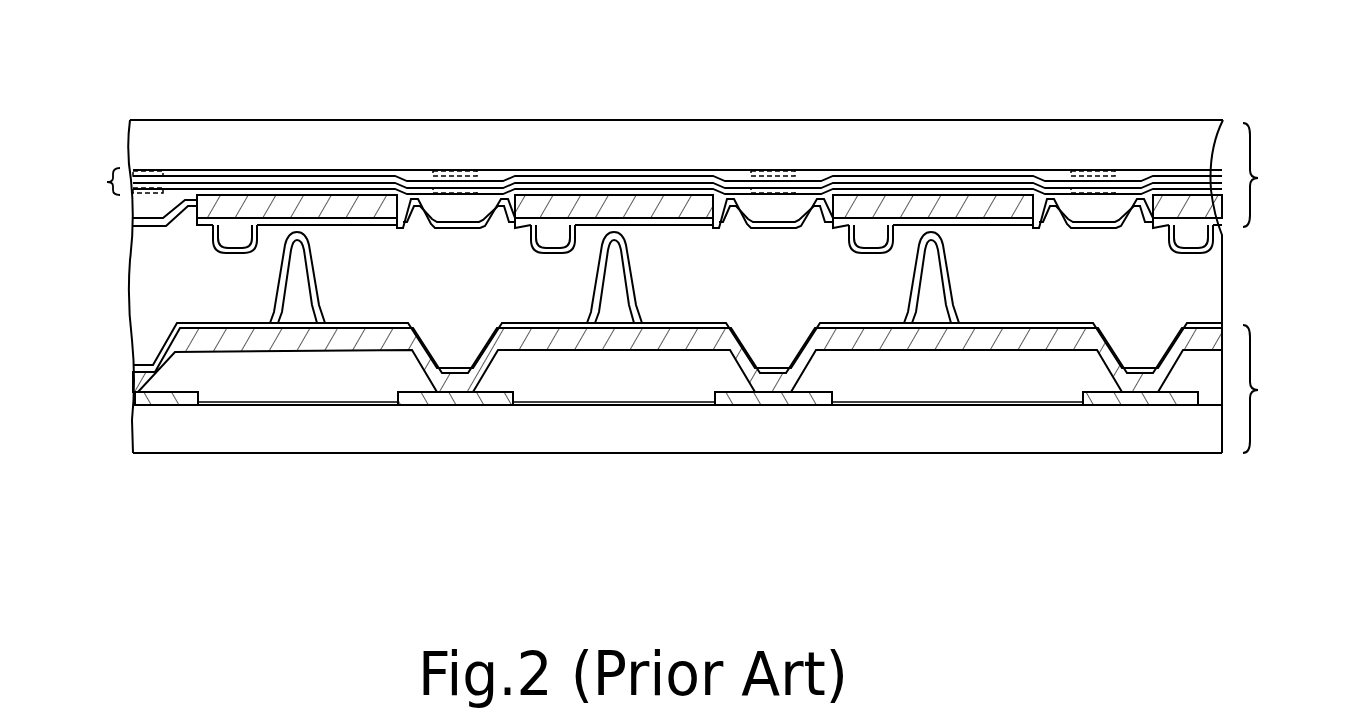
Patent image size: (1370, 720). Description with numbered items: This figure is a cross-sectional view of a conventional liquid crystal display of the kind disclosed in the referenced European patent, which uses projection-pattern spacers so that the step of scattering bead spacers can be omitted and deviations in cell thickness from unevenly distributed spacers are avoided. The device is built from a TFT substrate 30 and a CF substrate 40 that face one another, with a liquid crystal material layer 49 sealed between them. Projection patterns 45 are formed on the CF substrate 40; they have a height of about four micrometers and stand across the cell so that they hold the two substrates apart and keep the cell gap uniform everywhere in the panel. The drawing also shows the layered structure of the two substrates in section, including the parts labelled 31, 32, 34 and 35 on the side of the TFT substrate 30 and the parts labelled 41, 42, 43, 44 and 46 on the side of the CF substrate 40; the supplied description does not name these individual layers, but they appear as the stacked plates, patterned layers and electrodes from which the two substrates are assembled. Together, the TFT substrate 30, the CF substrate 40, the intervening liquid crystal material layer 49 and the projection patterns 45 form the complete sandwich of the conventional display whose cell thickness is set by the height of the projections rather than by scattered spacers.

The TFT substrate 30 is at (683, 126).
The upper glass substrate 31 is at (420, 142).
The color filter 32 is at (975, 215).
The black matrix and common electrode layers 34 is at (642, 182).
The protrusion of overcoat layer 35 is at (873, 233).
The CF substrate 40 is at (741, 405).
The lower glass substrate 41 is at (1152, 440).
The thin film transistor 42 is at (1113, 398).
The pixel electrode 43 is at (349, 388).
The organic insulating layer 44 is at (1187, 342).
The projection patterns 45 is at (630, 283).
The protective layer 46 is at (1185, 336).
The liquid crystal material layer 49 is at (1204, 272).